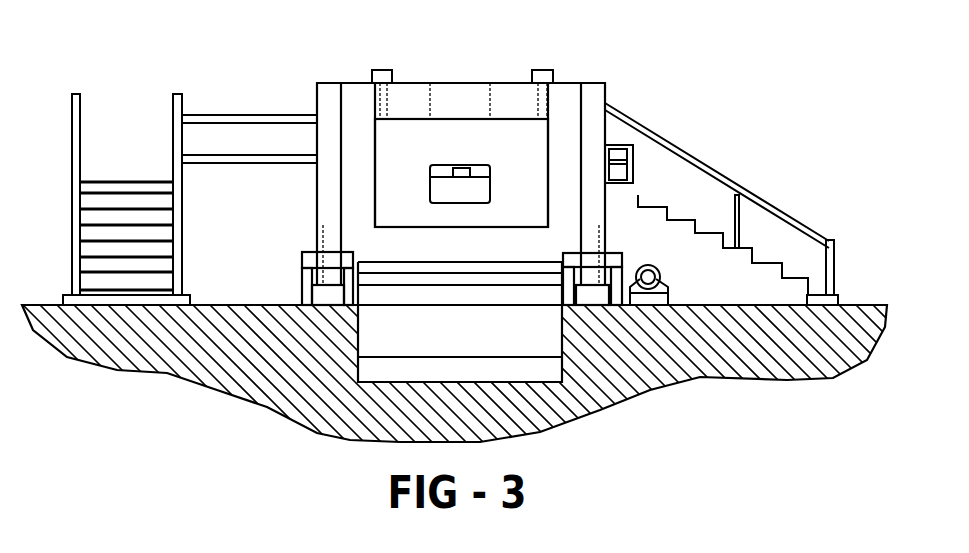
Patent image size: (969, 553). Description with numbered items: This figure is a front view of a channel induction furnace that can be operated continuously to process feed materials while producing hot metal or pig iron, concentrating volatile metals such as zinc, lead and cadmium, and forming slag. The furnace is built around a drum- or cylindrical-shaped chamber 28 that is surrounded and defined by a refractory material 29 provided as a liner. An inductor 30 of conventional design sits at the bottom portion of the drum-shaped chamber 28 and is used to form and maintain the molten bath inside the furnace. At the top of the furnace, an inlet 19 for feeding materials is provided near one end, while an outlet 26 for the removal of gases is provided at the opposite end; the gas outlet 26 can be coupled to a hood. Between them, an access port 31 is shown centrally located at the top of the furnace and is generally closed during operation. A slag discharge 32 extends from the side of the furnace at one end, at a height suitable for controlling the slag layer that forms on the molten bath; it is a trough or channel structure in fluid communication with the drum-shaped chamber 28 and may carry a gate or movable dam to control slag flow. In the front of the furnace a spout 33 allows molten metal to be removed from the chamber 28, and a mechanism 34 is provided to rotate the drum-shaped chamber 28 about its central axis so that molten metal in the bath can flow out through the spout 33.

The inlet 19 is at (382, 70).
The outlet 26 is at (545, 70).
The drum-shaped chamber 28 is at (373, 142).
The refractory material 29 is at (380, 252).
The inductor 30 is at (385, 343).
The access port 31 is at (467, 98).
The slag discharge 32 is at (617, 145).
The spout 33 is at (482, 171).
The rotating mechanism 34 is at (622, 257).